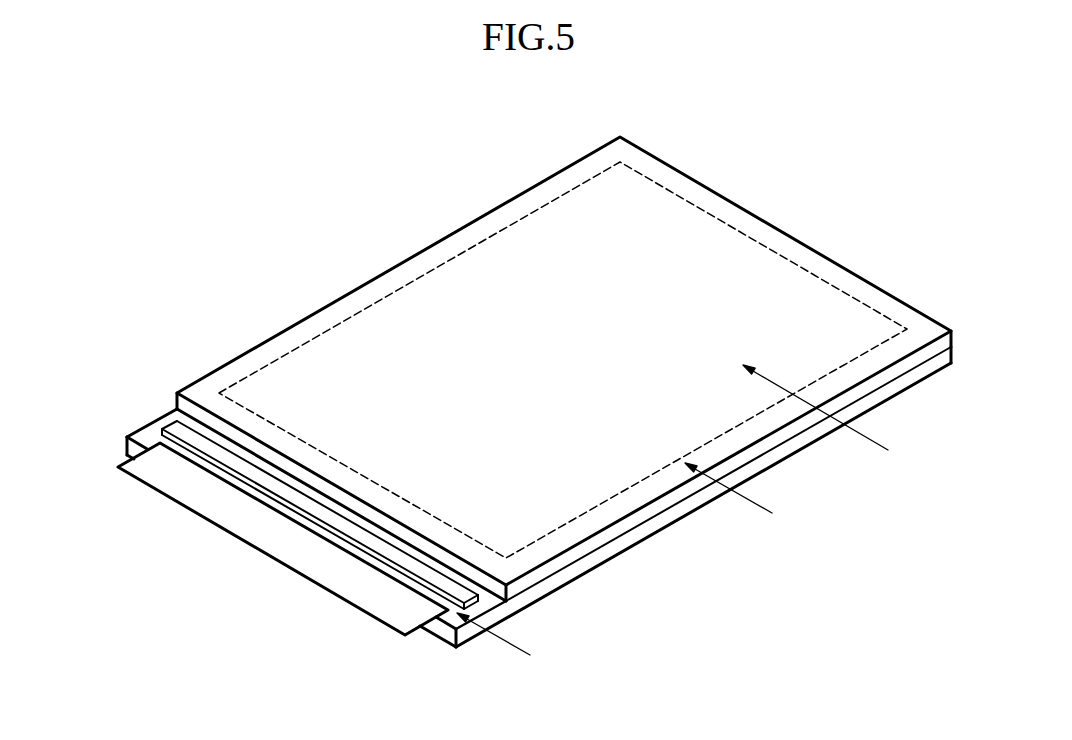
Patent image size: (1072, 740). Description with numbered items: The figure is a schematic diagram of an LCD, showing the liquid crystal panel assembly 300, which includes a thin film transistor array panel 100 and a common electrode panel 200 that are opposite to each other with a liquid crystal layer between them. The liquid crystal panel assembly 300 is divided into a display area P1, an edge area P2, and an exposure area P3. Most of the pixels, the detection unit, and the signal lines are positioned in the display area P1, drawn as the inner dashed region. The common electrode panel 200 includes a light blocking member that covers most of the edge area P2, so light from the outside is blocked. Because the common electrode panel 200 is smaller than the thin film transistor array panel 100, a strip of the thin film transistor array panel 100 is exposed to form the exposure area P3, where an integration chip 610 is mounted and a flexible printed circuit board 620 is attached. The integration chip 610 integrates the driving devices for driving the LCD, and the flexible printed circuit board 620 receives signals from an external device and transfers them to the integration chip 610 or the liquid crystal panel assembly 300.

The thin film transistor array panel 100 is at (952, 352).
The common electrode panel 200 is at (952, 333).
The liquid crystal panel assembly 300 is at (583, 392).
The integration chip 610 is at (170, 423).
The flexible printed circuit board 620 is at (242, 542).
The display area P1 is at (827, 419).
The edge area P2 is at (741, 501).
The exposure area P3 is at (505, 647).